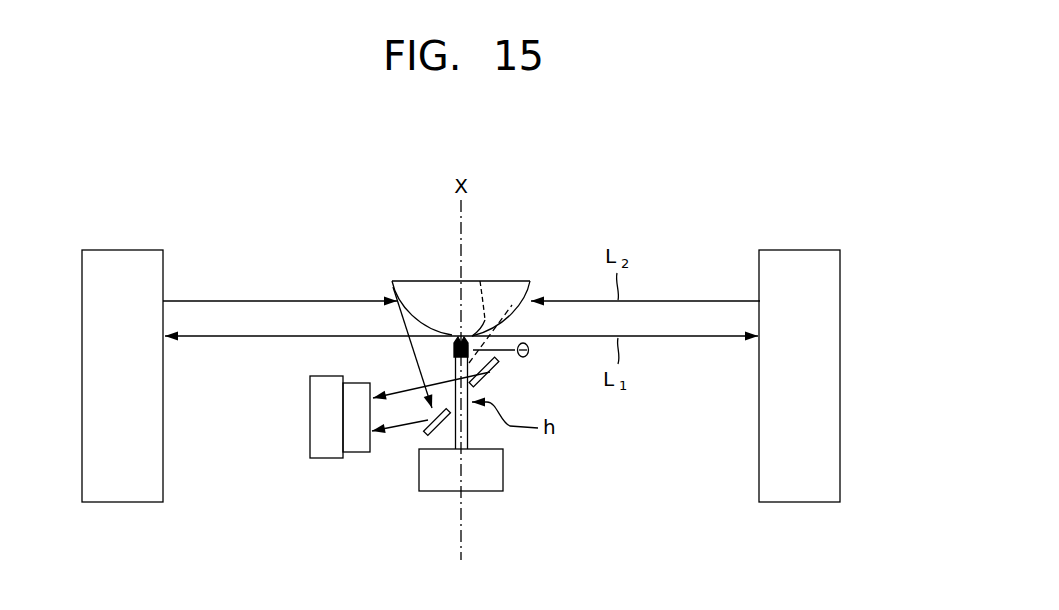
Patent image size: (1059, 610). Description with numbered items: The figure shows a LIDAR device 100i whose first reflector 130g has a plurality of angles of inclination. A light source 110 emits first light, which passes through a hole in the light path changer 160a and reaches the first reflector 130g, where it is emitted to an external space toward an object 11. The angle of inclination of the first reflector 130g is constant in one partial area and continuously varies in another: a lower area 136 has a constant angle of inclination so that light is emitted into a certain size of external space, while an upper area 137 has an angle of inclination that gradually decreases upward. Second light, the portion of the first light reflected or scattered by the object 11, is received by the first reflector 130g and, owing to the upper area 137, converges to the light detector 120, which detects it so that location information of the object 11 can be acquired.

The object 11 is at (122, 501).
The LIDAR device 100i is at (723, 205).
The light source 110 is at (493, 472).
The light detector 120 is at (325, 450).
The first reflector 130g is at (480, 264).
The lower area 136 is at (481, 282).
The upper area 137 is at (490, 328).
The light path changer 160a is at (495, 367).